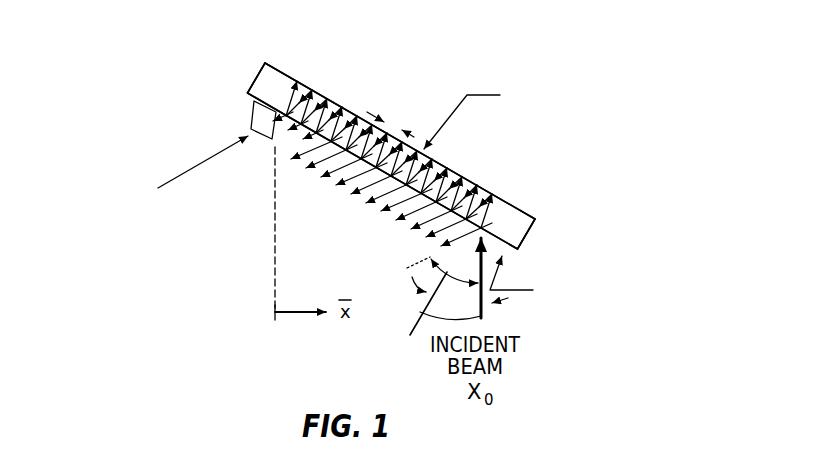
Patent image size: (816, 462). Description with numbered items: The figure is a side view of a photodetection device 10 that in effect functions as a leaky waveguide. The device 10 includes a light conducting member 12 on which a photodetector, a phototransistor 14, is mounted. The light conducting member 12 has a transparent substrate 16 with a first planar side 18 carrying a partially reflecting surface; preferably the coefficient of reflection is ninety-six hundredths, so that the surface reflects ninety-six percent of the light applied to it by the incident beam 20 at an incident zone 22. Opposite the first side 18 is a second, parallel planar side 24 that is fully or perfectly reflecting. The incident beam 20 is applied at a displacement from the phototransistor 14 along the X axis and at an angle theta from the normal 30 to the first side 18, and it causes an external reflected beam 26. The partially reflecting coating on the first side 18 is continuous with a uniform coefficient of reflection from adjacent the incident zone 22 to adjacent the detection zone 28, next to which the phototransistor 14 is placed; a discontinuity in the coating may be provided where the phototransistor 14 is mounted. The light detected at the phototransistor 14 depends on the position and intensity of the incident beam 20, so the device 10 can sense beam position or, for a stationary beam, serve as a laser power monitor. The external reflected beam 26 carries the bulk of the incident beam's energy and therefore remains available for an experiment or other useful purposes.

The photodetection device 10 is at (400, 52).
The light conducting member 12 is at (258, 72).
The phototransistor 14 is at (263, 145).
The transparent substrate 16 is at (267, 80).
The first planar side 18 is at (517, 290).
The incident beam 20 is at (412, 330).
The incident zone 22 is at (523, 240).
The second planar side 24 is at (456, 167).
The external reflected beam 26 is at (428, 302).
The detection zone 28 is at (283, 92).
The normal 30 is at (427, 240).